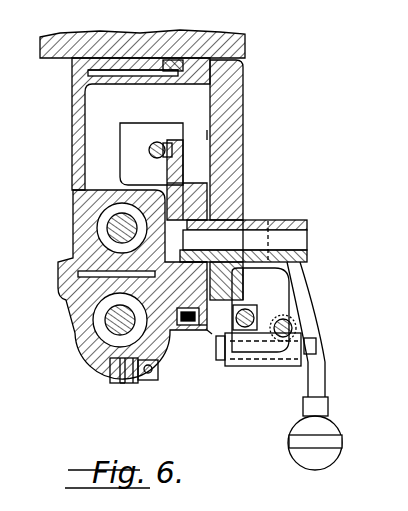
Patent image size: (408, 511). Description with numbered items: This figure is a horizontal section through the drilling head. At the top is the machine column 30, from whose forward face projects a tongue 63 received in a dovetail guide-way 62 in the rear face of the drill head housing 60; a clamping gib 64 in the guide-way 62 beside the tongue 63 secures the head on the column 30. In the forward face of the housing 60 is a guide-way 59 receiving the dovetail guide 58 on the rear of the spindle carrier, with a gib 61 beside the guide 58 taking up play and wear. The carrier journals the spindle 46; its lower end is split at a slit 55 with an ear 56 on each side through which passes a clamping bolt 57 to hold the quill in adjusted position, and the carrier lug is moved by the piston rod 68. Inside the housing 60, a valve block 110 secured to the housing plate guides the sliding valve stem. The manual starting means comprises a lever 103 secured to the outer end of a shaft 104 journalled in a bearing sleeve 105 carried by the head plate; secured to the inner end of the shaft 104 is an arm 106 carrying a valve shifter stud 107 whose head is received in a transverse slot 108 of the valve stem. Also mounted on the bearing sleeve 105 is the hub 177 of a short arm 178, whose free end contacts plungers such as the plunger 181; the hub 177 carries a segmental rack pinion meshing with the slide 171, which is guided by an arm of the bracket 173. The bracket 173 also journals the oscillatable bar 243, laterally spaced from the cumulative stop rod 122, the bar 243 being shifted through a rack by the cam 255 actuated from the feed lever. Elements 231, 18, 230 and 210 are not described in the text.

The machine column 30 is at (196, 41).
The drill head housing 60 is at (79, 133).
The dovetail guide-way 62 is at (118, 76).
The tongue 63 is at (138, 72).
The clamping gib 64 is at (172, 65).
The bearing sleeve 105 is at (245, 222).
The shaft 104 is at (306, 246).
The short arm 178 is at (237, 206).
The plunger 181 is at (232, 194).
The hub 177 is at (242, 215).
The valve block 110 is at (128, 146).
The transverse slot 108 is at (155, 141).
The valve shifter stud 107 is at (176, 140).
The arm 106 is at (167, 177).
The spacer 231 is at (192, 183).
The shaft axis 18 is at (203, 136).
The guide-way 59 is at (84, 250).
The piston rod 68 is at (109, 218).
The dovetail guide 58 is at (84, 303).
The spindle 46 is at (114, 326).
The gib 61 is at (186, 325).
The stop surface 230 is at (204, 335).
The edge 210 is at (215, 370).
The ear 56 is at (111, 384).
The slit 55 is at (121, 385).
The clamping bolt 57 is at (156, 382).
The bracket 173 is at (265, 290).
The slide 171 is at (288, 275).
The oscillatable bar 243 is at (303, 326).
The cumulative stop rod 122 is at (251, 355).
The cam 255 is at (318, 350).
The lever 103 is at (320, 366).